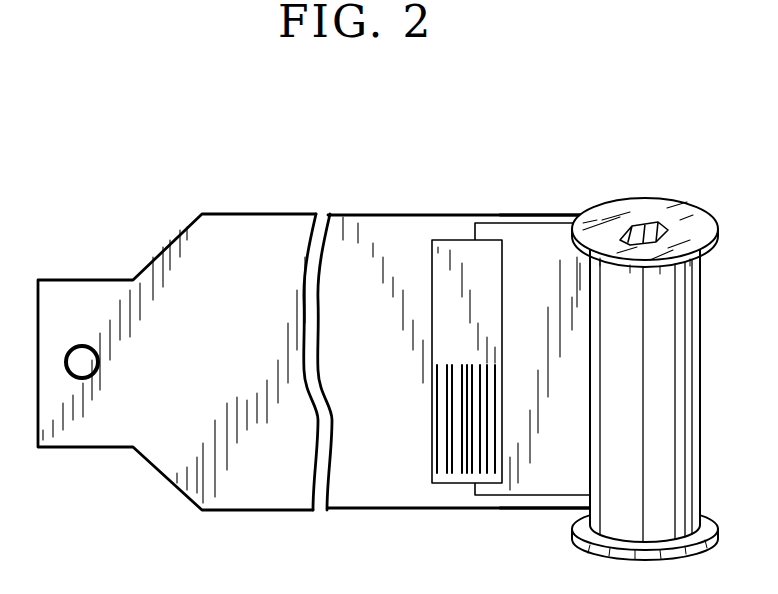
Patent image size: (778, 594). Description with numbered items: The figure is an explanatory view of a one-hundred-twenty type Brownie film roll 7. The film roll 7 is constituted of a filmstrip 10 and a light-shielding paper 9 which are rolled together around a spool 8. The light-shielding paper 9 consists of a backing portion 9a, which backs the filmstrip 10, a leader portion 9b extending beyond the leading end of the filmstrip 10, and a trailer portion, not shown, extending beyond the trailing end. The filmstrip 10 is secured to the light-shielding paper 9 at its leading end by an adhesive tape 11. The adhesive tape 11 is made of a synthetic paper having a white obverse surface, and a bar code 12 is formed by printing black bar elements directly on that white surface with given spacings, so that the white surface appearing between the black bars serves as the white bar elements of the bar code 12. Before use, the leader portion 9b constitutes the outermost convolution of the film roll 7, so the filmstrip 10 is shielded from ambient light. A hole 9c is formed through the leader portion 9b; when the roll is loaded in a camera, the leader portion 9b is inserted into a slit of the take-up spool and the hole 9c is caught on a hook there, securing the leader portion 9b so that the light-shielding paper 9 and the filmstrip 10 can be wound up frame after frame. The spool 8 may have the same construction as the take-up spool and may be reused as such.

The 120 type film roll 7 is at (430, 155).
The spool 8 is at (649, 198).
The light-shielding paper 9 is at (377, 186).
The backing portion 9a is at (556, 215).
The leader portion 9b is at (245, 214).
The hole 9c is at (100, 362).
The filmstrip 10 is at (503, 223).
The adhesive tape 11 is at (445, 300).
The bar code 12 is at (412, 412).